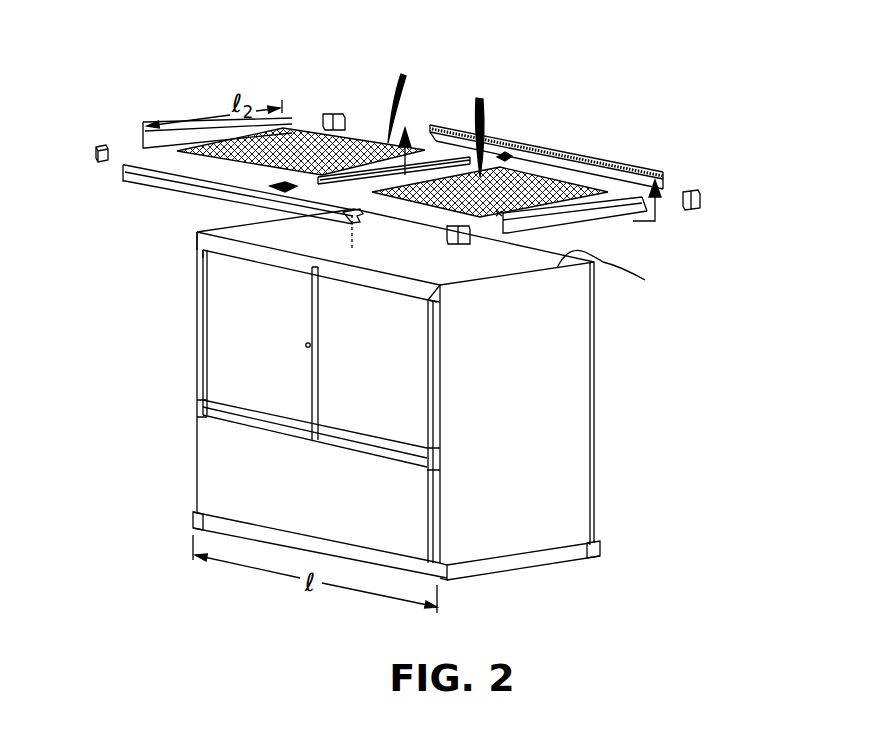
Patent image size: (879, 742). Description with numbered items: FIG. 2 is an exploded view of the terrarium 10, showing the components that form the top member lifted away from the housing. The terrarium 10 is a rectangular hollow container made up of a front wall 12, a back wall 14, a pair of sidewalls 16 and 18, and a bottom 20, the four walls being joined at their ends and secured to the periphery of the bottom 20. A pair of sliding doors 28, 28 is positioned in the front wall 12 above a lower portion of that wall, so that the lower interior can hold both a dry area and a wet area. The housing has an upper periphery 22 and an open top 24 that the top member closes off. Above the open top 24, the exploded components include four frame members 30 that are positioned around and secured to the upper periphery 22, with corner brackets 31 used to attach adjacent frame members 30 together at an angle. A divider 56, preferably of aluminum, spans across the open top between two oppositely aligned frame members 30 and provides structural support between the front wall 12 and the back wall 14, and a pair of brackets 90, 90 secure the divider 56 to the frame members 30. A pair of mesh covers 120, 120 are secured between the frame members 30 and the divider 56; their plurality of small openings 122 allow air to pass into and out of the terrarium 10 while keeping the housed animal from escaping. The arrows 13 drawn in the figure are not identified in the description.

The terrarium 10 is at (698, 70).
The front wall 12 is at (327, 498).
The direction arrows 13 is at (541, 166).
The back wall 14 is at (494, 267).
The sidewall 16 is at (528, 405).
The sidewall 18 is at (303, 247).
The bottom 20 is at (508, 570).
The upper periphery 22 is at (616, 272).
The open top 24 is at (225, 226).
The door 28 is at (267, 360).
The frame member 30 is at (201, 126).
The bracket 31 is at (98, 146).
The divider 56 is at (375, 137).
The bracket 90 is at (270, 185).
The cover 120 is at (350, 132).
The opening 122 is at (446, 112).